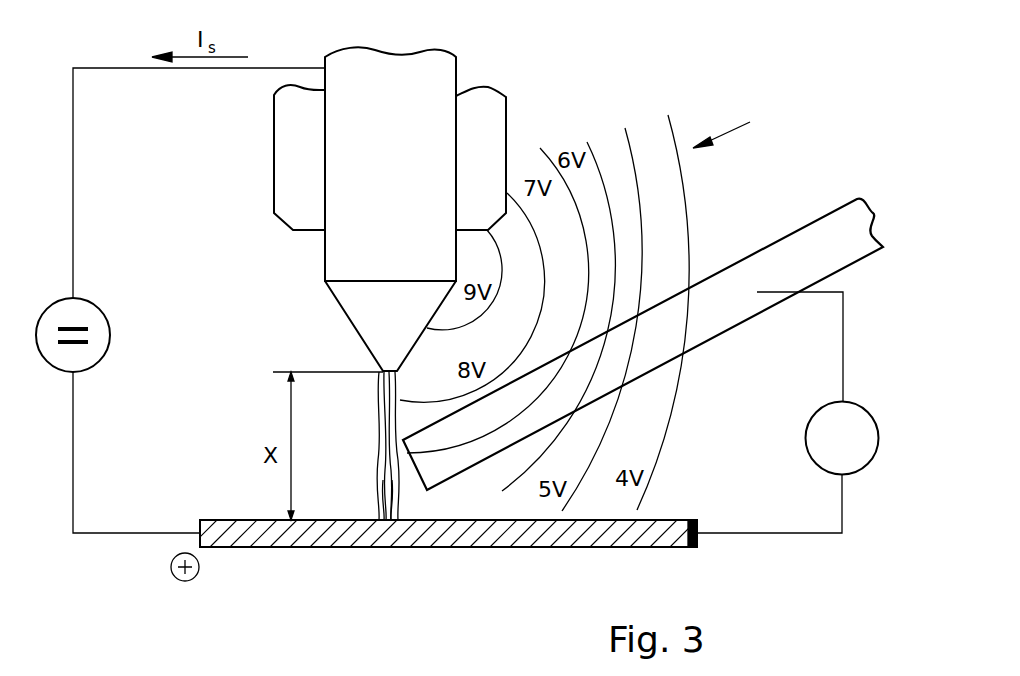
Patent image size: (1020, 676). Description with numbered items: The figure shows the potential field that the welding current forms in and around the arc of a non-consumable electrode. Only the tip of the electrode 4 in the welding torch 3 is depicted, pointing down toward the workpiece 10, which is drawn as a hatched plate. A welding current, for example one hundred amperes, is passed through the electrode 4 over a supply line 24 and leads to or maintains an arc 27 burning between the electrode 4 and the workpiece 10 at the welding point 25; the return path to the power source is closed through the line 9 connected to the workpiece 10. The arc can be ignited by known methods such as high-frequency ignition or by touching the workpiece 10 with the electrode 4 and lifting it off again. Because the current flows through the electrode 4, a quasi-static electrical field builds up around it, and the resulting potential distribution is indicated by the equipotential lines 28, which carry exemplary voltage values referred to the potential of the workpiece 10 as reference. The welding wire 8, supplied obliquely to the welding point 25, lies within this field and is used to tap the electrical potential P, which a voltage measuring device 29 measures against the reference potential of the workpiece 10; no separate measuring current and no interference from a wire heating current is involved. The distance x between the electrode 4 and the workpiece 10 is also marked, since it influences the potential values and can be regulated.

The welding torch 3 is at (296, 174).
The non-consumable electrode 4 is at (407, 87).
The welding wire 8 is at (825, 248).
The return line of power source 9 is at (120, 533).
The workpiece 10 is at (273, 533).
The supply line 24 is at (122, 68).
The welding point 25 is at (387, 530).
The arc 27 is at (390, 443).
The equipotential lines 28 is at (738, 126).
The voltage measuring device 29 is at (858, 473).